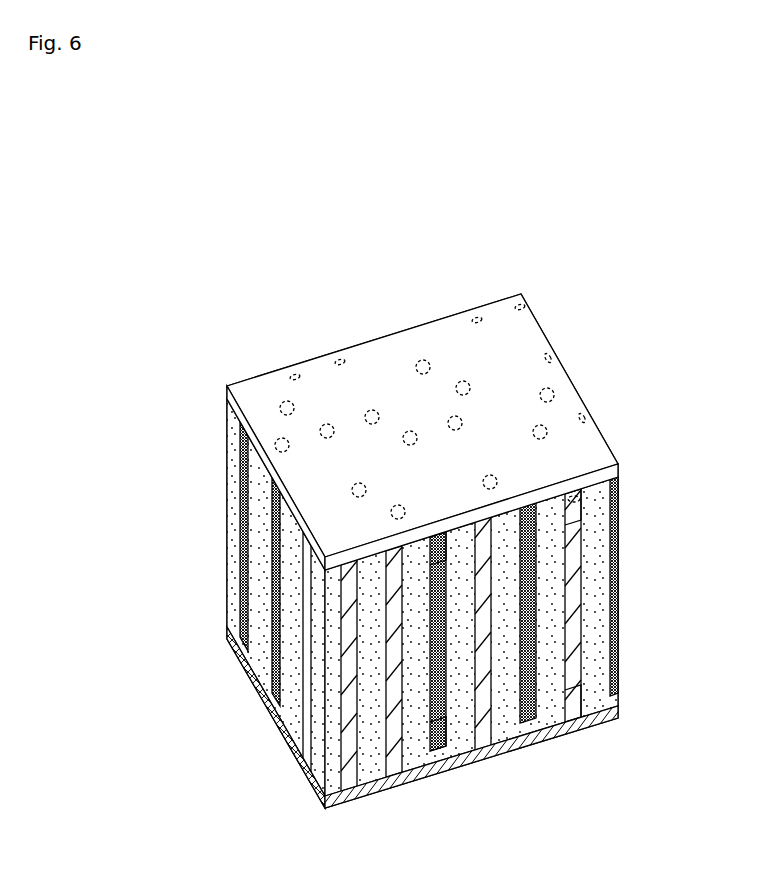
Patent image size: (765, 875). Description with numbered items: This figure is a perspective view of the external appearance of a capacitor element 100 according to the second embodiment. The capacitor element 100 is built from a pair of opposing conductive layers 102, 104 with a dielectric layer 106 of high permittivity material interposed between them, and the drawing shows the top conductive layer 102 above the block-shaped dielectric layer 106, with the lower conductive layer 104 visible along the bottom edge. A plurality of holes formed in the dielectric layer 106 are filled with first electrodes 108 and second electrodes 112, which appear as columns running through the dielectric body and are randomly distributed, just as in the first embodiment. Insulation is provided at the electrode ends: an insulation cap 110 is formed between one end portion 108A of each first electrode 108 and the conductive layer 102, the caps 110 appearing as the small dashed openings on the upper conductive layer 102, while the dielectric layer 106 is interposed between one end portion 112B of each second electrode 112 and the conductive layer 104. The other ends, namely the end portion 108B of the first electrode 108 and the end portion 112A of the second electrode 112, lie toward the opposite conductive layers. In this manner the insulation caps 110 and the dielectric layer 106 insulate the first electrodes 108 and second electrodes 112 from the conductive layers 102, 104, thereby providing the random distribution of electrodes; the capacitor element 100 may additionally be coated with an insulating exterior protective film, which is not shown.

The capacitor element 100 is at (620, 319).
The conductive layer 102 is at (258, 387).
The conductive layer 104 is at (240, 666).
The dielectric layer 106 is at (227, 536).
The first electrode 108 is at (577, 567).
The one end portion of first electrode 108A is at (574, 497).
The end portion of first electrode 108B is at (580, 722).
The insulation cap 110 is at (548, 426).
The second electrode 112 is at (442, 705).
The end portion of second electrode 112A is at (438, 534).
The one end portion of second electrode 112B is at (438, 753).